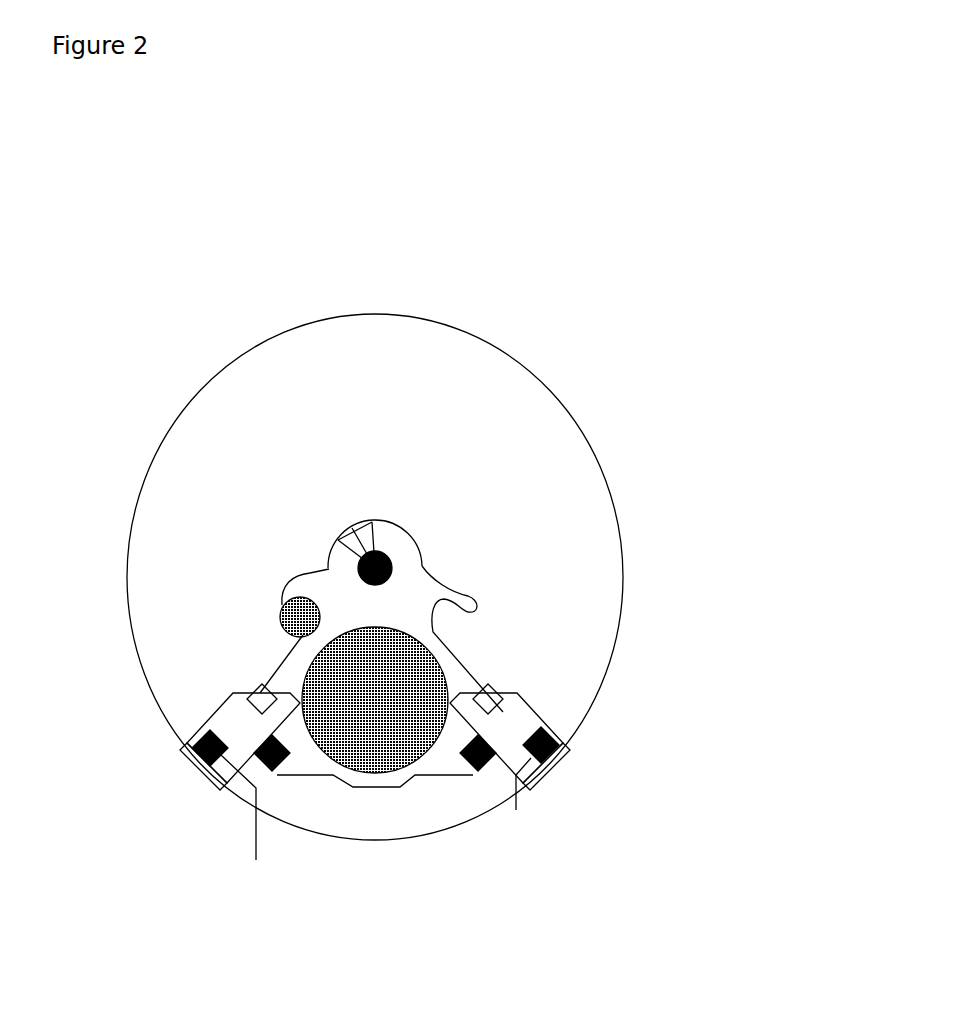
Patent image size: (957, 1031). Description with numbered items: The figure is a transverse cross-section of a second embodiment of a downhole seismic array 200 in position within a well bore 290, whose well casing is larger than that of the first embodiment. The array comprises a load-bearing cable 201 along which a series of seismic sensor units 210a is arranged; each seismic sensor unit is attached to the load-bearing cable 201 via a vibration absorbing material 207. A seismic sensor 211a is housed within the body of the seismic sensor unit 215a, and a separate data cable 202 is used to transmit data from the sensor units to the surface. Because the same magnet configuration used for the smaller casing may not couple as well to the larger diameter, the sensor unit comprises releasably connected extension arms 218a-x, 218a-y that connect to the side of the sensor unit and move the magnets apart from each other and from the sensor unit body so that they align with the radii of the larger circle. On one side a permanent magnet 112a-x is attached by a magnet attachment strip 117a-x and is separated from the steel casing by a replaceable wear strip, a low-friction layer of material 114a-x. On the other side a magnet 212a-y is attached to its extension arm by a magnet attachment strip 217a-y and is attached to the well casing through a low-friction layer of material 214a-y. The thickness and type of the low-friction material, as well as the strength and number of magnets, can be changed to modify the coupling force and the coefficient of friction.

The downhole seismic array 200 is at (336, 255).
The well bore 290 is at (240, 356).
The load-bearing cable 201 is at (385, 566).
The vibration absorbing material 207 is at (395, 569).
The seismic sensor unit body 215a is at (337, 597).
The data cable 202 is at (294, 610).
The seismic sensor 211a is at (413, 652).
The seismic sensor unit 210a is at (668, 642).
The extension arm 218a-x is at (235, 717).
The permanent magnet 112a-x is at (206, 749).
The low-friction layer of material 114a-x is at (208, 768).
The magnet attachment strip 117a-x is at (240, 820).
The extension arm 218a-y is at (541, 713).
The magnet attachment strip 217a-y is at (538, 732).
The low-friction layer of material 214a-y is at (557, 766).
The magnet 212a-y is at (538, 804).